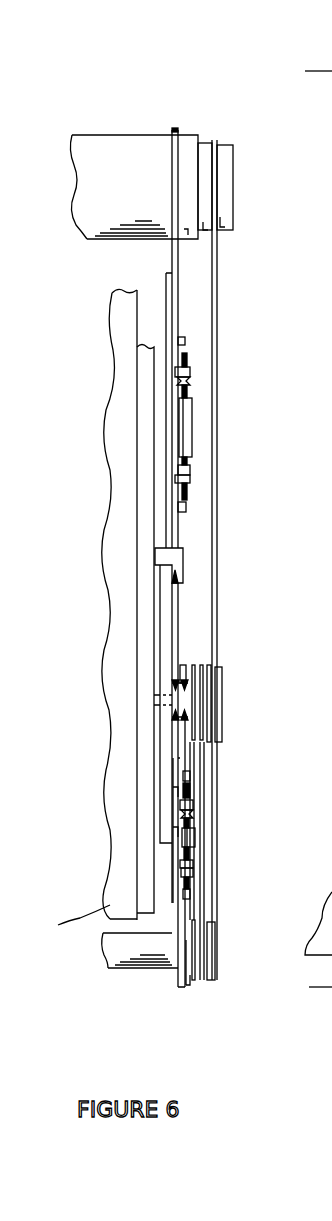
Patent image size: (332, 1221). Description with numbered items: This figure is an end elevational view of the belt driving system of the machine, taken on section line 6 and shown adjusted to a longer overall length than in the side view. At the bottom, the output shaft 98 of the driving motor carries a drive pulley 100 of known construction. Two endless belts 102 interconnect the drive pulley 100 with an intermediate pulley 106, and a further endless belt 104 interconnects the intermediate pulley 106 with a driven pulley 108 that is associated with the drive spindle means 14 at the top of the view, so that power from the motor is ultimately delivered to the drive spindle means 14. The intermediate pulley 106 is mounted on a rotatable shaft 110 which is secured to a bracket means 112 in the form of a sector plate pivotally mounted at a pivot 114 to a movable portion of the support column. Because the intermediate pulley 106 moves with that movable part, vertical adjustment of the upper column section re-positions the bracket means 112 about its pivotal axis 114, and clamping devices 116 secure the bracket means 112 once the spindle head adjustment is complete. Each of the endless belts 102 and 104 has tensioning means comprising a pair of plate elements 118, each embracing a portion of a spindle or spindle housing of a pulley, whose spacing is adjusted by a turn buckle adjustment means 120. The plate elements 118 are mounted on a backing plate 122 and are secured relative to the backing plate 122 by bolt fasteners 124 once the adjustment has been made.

The section line 6 is at (307, 527).
The drive spindle means 14 is at (205, 147).
The output shaft 98 is at (190, 984).
The drive pulley 100 is at (215, 938).
The endless belts 102 is at (198, 810).
The endless belt 104 is at (217, 562).
The intermediate pulley 106 is at (221, 702).
The driven pulley 108 is at (227, 172).
The rotatable shaft 110 is at (187, 670).
The bracket means 112 is at (160, 657).
The pivot 114 is at (173, 698).
The clamping devices 116 is at (157, 555).
The plate elements 118 is at (175, 248).
The turn buckle adjustment means 120 is at (193, 418).
The backing plate 122 is at (170, 297).
The bolt fasteners 124 is at (185, 340).